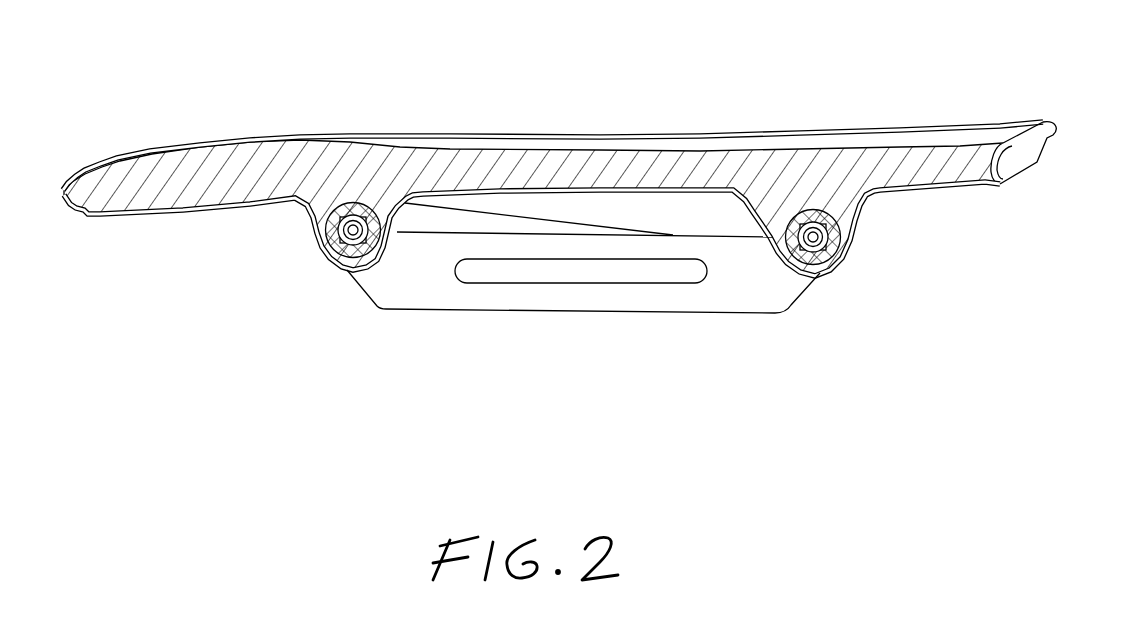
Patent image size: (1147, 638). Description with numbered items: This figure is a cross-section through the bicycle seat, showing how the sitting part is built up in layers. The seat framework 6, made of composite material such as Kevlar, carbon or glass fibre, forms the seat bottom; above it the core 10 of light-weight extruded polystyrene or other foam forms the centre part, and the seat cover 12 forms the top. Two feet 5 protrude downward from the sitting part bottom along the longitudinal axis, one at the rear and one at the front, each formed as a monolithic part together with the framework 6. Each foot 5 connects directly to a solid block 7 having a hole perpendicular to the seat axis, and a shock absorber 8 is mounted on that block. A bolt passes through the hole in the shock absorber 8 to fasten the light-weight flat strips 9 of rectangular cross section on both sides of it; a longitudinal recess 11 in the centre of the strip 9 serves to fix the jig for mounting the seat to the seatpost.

The foot 5 is at (310, 197).
The seat framework 6 is at (833, 241).
The solid block 7 is at (340, 262).
The shock absorber 8 is at (327, 245).
The strip 9 is at (733, 283).
The core 10 is at (907, 173).
The longitudinal recess 11 is at (513, 270).
The seat cover 12 is at (948, 137).